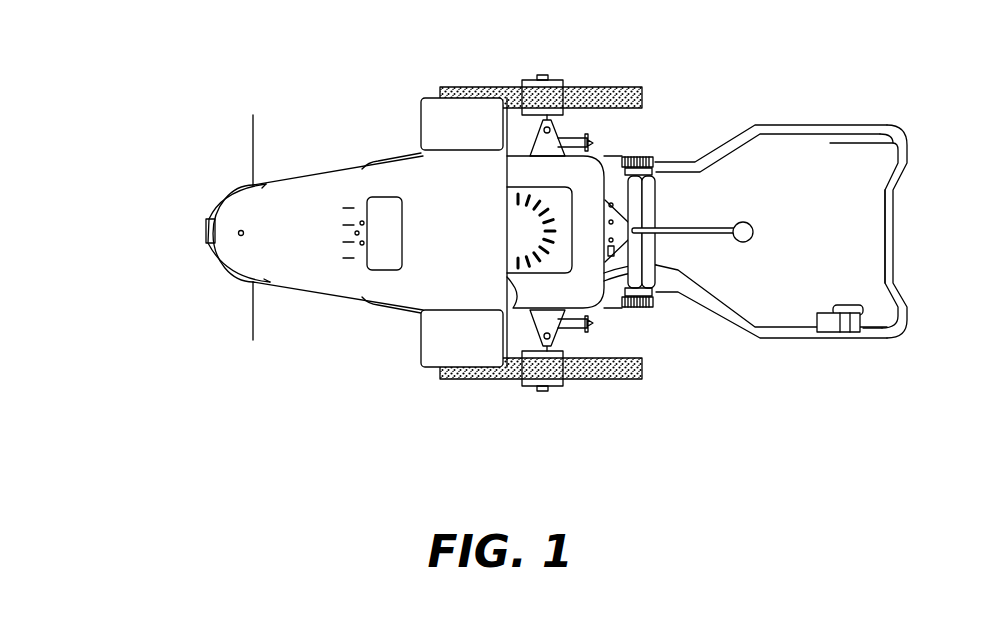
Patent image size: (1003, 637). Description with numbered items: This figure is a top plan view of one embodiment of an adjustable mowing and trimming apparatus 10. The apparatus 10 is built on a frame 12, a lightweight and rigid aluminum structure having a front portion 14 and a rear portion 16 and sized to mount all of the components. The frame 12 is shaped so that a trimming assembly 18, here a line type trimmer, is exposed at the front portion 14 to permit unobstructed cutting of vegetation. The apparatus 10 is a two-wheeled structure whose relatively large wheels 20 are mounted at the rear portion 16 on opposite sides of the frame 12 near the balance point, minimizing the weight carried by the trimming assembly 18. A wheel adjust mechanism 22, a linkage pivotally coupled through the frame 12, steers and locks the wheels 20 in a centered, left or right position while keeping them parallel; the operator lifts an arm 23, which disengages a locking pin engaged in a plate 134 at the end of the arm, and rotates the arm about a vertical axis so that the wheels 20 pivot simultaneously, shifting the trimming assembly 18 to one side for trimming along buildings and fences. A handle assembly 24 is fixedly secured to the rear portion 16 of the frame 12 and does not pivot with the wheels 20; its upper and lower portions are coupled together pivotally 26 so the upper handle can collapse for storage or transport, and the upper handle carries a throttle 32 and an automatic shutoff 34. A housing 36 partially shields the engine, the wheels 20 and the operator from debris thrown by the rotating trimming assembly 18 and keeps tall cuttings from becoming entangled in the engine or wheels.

The mowing and trimming apparatus 10 is at (291, 56).
The frame 12 is at (613, 303).
The front portion 14 is at (288, 223).
The rear portion 16 is at (656, 201).
The trimming assembly 18 is at (203, 266).
The wheels 20 is at (466, 88).
The wheel adjust mechanism 22 is at (584, 132).
The arm 23 is at (732, 229).
The handle assembly 24 is at (889, 228).
The pivotal coupling 26 is at (651, 157).
The throttle 32 is at (834, 312).
The automatic shutoff 34 is at (883, 197).
The housing 36 is at (427, 247).
The plate 134 is at (625, 222).